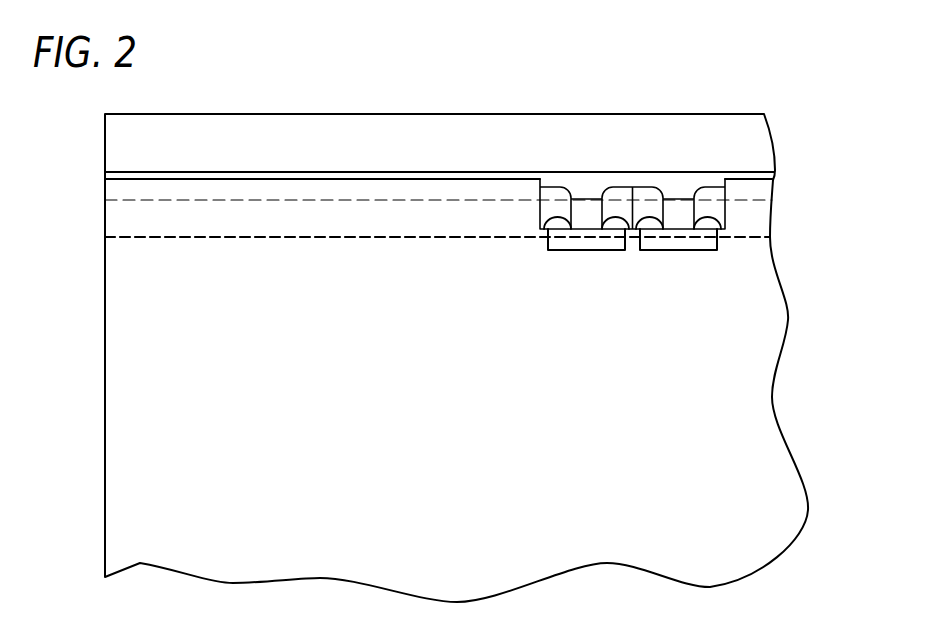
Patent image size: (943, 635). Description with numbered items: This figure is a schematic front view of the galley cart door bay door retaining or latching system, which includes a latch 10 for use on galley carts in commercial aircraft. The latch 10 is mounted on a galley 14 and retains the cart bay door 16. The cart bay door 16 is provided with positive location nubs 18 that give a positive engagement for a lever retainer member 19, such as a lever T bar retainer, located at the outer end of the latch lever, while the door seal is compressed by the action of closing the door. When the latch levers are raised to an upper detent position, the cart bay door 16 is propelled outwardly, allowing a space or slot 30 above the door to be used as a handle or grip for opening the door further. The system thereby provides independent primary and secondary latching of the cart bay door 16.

The latch 10 is at (427, 307).
The galley 14 is at (363, 132).
The cart bay door 16 is at (165, 390).
The positive location nubs 18 is at (553, 229).
The lever retainer member 19 is at (587, 250).
The slot 30 is at (577, 175).